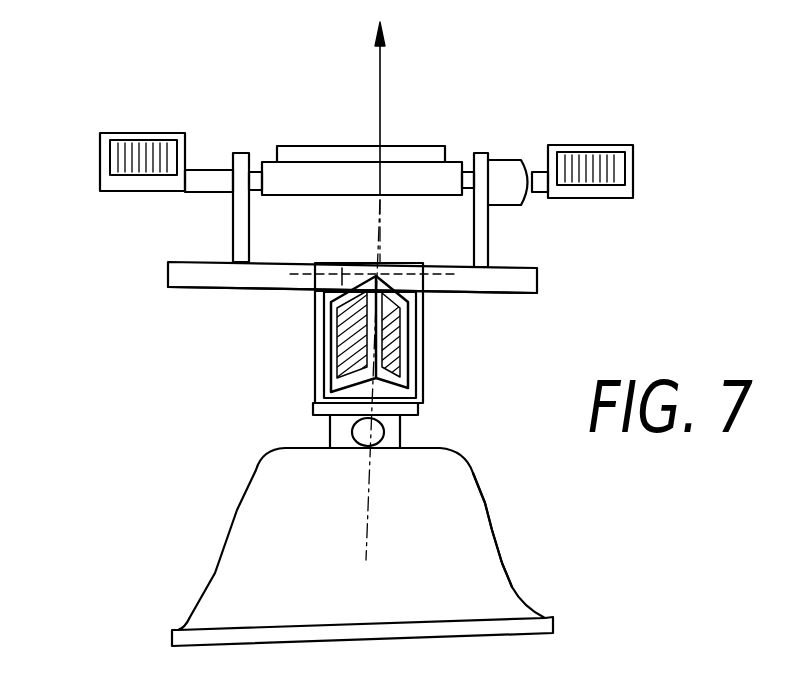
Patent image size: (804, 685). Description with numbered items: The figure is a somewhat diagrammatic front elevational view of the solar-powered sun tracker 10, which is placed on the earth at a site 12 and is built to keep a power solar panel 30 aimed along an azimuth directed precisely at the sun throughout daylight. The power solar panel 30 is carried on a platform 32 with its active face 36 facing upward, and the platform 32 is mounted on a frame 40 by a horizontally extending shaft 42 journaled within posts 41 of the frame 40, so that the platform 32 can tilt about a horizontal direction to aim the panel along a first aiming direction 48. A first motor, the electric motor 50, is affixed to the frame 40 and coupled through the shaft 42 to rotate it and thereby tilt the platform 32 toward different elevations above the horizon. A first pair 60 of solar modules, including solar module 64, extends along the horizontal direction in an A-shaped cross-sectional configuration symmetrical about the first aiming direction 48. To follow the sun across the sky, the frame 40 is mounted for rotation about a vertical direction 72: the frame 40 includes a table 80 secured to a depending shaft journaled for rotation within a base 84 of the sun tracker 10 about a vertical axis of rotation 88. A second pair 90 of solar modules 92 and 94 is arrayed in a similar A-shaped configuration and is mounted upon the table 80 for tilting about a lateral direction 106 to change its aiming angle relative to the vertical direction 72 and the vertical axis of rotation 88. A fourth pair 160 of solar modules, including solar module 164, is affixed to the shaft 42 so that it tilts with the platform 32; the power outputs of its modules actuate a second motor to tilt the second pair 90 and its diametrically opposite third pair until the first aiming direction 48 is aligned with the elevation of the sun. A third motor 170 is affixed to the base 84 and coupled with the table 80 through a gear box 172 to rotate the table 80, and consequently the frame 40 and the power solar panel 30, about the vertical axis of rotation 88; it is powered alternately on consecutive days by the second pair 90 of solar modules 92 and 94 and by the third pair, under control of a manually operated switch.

The sun tracker 10 is at (240, 507).
The site 12 is at (170, 645).
The power solar panel 30 is at (404, 139).
The platform 32 is at (455, 158).
The active face 36 is at (308, 146).
The frame 40 is at (532, 303).
The posts 41 is at (233, 217).
The shaft 42 is at (206, 166).
The first aiming direction 48 is at (381, 62).
The electric motor 50 is at (510, 165).
The first pair of solar modules 60 is at (640, 145).
The solar module 64 is at (618, 178).
The vertical direction 72 is at (370, 512).
The table 80 is at (540, 280).
The base 84 is at (475, 540).
The vertical axis of rotation 88 is at (382, 250).
The second pair of solar modules 90 is at (420, 340).
The solar module 92 is at (390, 362).
The solar module 94 is at (337, 337).
The lateral direction 106 is at (342, 268).
The fourth pair of solar modules 160 is at (98, 136).
The solar module 164 is at (115, 165).
The third motor 170 is at (400, 425).
The gear box 172 is at (330, 428).